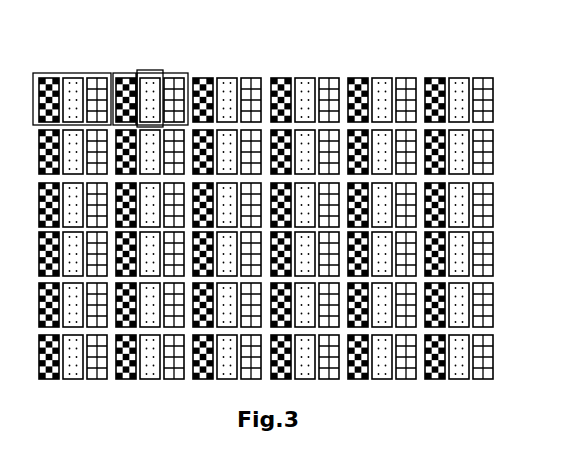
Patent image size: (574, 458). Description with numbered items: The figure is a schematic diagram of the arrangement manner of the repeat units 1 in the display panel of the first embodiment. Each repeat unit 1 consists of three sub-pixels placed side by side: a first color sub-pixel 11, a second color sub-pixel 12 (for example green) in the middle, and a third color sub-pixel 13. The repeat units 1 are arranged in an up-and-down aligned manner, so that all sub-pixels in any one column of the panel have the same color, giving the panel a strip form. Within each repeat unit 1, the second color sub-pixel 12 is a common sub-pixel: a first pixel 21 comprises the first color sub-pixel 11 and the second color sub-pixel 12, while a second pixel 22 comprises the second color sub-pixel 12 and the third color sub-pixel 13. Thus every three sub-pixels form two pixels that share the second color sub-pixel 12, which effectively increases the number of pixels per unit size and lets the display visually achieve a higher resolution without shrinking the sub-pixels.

The repeated unit 1 is at (75, 73).
The first color sub-pixel 11 is at (202, 78).
The second color sub-pixel 12 is at (227, 78).
The third color sub-pixel 13 is at (253, 78).
The first pixel 21 is at (125, 73).
The second pixel 22 is at (163, 70).